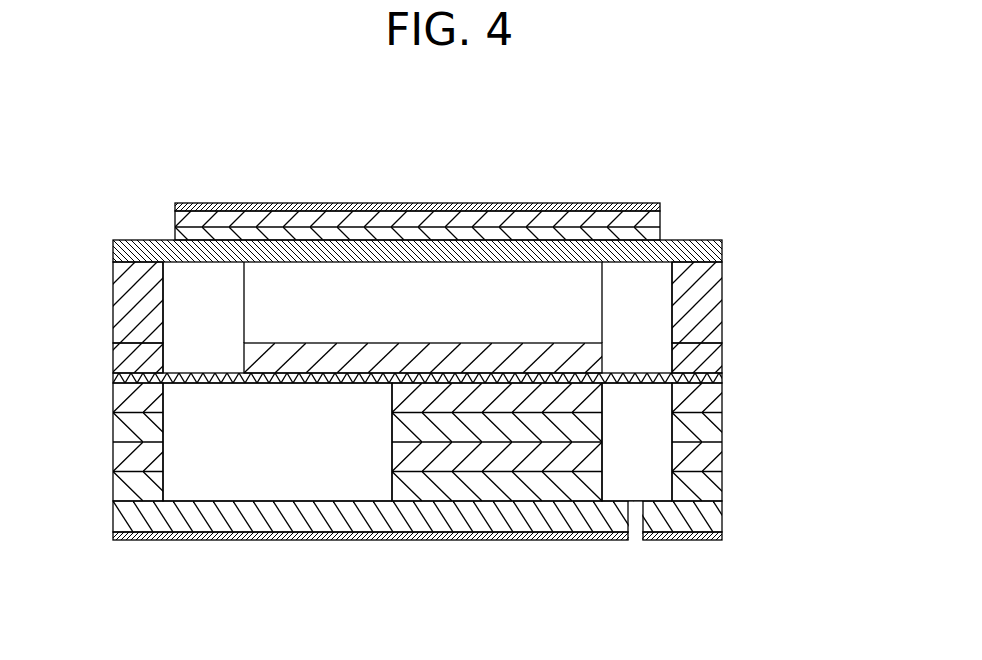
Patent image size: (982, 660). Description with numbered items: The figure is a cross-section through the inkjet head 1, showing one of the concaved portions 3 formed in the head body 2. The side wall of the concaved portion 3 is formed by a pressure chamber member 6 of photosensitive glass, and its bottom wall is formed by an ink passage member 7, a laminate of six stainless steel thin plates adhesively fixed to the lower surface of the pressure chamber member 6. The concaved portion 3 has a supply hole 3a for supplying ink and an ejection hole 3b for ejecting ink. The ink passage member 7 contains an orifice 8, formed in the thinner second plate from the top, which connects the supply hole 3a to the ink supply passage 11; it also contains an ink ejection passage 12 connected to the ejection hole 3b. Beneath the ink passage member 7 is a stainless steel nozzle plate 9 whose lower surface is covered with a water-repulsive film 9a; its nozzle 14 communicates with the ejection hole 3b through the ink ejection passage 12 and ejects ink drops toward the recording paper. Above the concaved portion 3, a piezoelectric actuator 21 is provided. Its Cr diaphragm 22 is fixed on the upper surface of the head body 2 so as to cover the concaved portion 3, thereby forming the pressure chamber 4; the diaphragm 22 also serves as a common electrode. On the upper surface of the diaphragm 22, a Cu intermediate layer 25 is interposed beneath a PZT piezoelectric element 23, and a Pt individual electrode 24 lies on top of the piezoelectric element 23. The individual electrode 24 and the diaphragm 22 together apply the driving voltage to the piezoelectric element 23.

The inkjet head 1 is at (129, 107).
The head body 2 is at (416, 385).
The concaved portion 3 is at (417, 258).
The supply hole 3a is at (209, 346).
The ejection hole 3b is at (641, 346).
The pressure chamber 4 is at (457, 322).
The pressure chamber member 6 is at (723, 293).
The ink passage member 7 is at (728, 344).
The orifice 8 is at (202, 383).
The nozzle plate 9 is at (722, 518).
The water-repulsive film 9a is at (722, 541).
The ink supply passage 11 is at (332, 452).
The ink ejection passage 12 is at (652, 452).
The nozzle 14 is at (641, 553).
The piezoelectric actuator 21 is at (494, 166).
The diaphragm 22 is at (723, 251).
The piezoelectric element 23 is at (660, 219).
The individual electrode 24 is at (660, 204).
The intermediate layer 25 is at (660, 234).